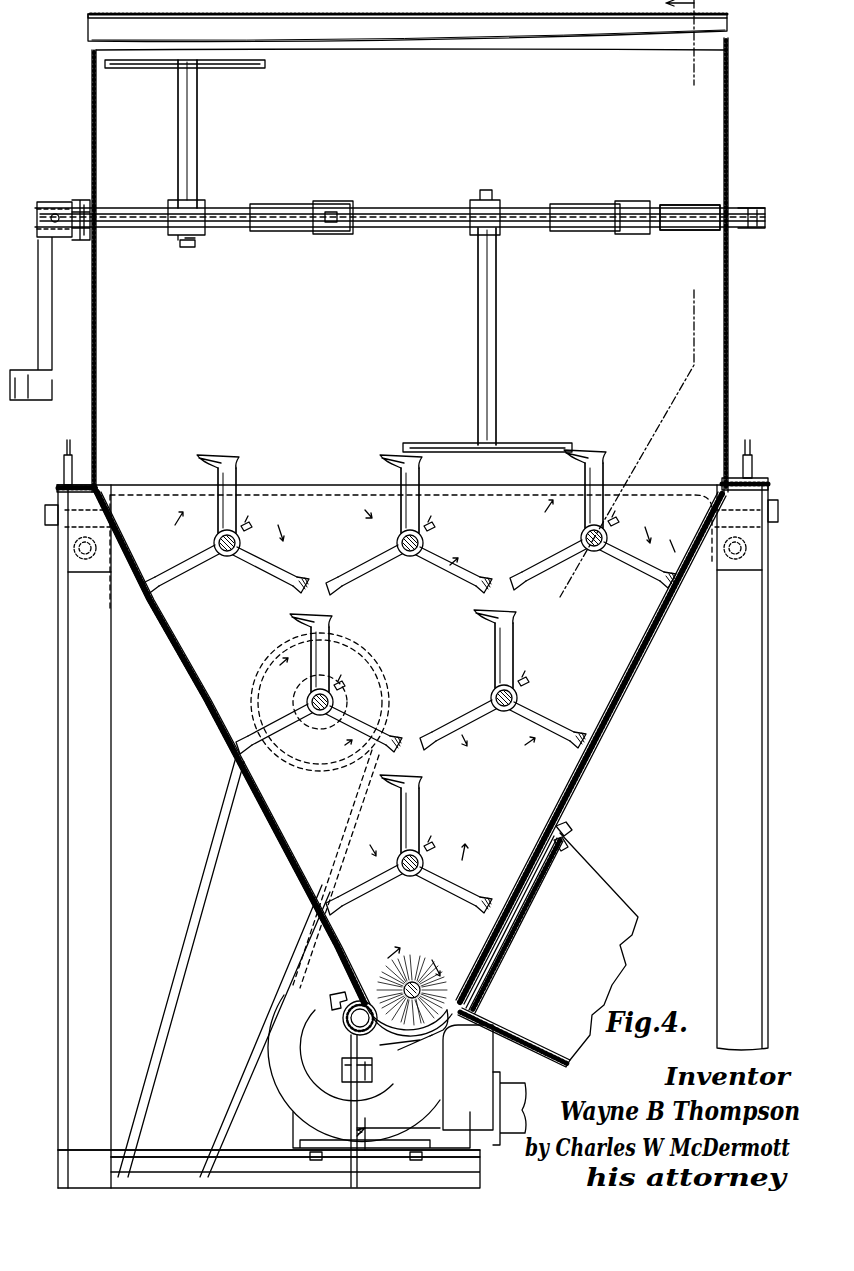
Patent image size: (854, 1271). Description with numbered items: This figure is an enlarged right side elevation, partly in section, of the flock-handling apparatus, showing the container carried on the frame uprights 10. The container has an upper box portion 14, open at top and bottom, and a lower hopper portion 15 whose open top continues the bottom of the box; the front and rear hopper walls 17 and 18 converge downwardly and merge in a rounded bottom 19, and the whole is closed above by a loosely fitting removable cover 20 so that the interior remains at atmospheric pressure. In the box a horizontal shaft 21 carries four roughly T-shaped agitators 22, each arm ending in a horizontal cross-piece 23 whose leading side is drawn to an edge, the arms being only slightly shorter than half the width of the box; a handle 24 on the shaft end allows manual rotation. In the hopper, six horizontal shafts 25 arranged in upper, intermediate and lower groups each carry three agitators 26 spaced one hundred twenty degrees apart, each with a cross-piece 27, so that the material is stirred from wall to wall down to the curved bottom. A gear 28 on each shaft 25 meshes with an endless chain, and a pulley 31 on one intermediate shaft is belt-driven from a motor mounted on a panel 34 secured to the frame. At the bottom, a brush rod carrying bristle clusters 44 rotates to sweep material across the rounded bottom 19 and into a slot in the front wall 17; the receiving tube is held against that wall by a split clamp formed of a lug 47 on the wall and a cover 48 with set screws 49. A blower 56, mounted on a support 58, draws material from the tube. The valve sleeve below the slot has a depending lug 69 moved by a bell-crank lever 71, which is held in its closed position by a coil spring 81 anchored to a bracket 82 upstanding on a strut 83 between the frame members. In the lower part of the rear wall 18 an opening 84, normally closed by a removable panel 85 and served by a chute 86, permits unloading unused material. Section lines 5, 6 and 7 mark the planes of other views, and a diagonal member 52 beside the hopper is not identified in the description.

The section line 5- 5 is at (418, 1171).
The section line 6- 6 is at (370, 1114).
The section line 7- 7 is at (345, 1045).
The uprights 10 is at (70, 782).
The box portion 14 is at (728, 305).
The hopper portion 15 is at (621, 740).
The front wall 17 is at (200, 705).
The rear wall 18 is at (630, 695).
The rounded bottom 19 is at (440, 1033).
The removable cover 20 is at (727, 22).
The horizontal shaft 21 is at (133, 232).
The agitators 22 is at (187, 155).
The horizontal cross-piece 23 is at (245, 68).
The handle 24 is at (45, 338).
The horizontal shafts 25 is at (410, 556).
The agitators 26 is at (232, 518).
The horizontal cross-piece 27 is at (230, 462).
The gear 28 is at (683, 218).
The pulley 31 is at (315, 765).
The panel 34 is at (250, 1158).
The bristle clusters 44 is at (418, 958).
The lug 47 is at (350, 985).
The cover 48 is at (330, 990).
The set screws 49 is at (342, 1022).
The diagonal brace 52 is at (181, 967).
The blower 56 is at (455, 1105).
The support 58 is at (178, 1155).
The depending lug 69 is at (372, 1080).
The bell-crank lever 71 is at (358, 1100).
The second coil spring 81 is at (350, 1135).
The bracket 82 is at (365, 1130).
The strut 83 is at (455, 1150).
The opening 84 is at (523, 853).
The removable panel 85 is at (520, 893).
The chute 86 is at (608, 900).